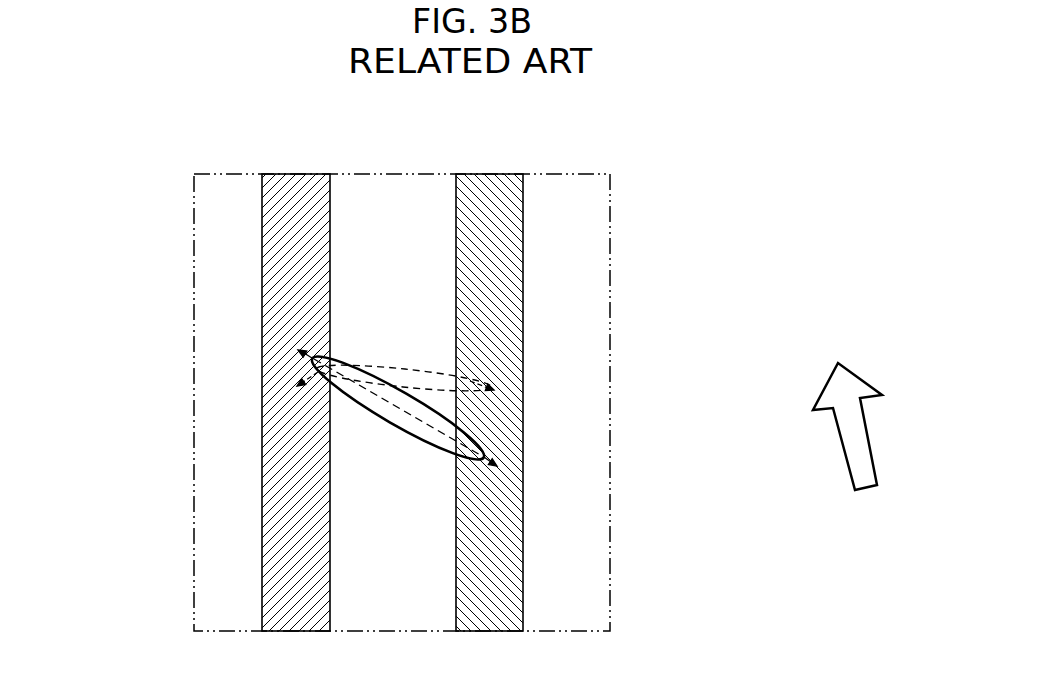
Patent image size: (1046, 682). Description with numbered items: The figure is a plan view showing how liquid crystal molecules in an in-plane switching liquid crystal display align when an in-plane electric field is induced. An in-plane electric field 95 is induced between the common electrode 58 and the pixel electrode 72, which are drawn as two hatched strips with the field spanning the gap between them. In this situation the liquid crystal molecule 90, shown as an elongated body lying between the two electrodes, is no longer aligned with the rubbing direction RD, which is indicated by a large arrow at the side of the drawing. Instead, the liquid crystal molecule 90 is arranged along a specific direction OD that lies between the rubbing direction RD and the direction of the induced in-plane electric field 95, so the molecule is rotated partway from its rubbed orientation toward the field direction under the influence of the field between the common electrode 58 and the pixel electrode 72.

The common electrode 58 is at (262, 494).
The pixel electrode 72 is at (523, 492).
The liquid crystal molecule 90 is at (458, 428).
The in-plane electric field 95 is at (410, 367).
The specific direction OD is at (393, 405).
The rubbing direction RD is at (864, 426).